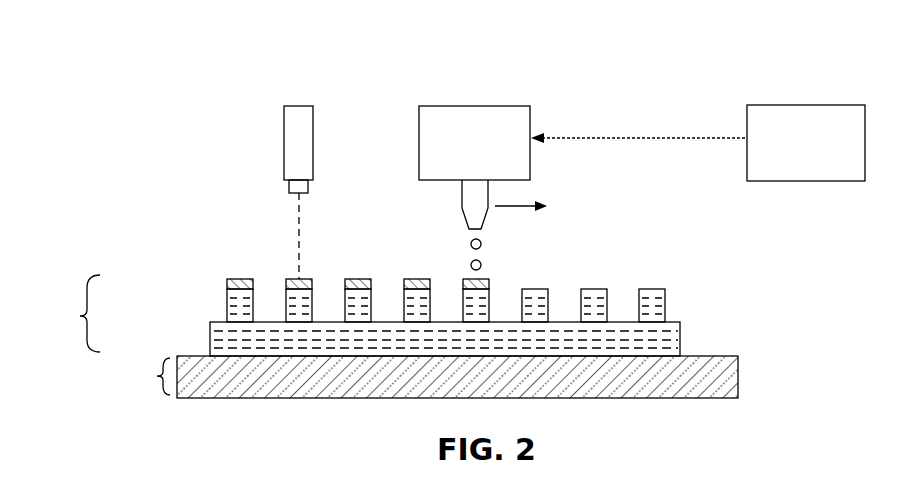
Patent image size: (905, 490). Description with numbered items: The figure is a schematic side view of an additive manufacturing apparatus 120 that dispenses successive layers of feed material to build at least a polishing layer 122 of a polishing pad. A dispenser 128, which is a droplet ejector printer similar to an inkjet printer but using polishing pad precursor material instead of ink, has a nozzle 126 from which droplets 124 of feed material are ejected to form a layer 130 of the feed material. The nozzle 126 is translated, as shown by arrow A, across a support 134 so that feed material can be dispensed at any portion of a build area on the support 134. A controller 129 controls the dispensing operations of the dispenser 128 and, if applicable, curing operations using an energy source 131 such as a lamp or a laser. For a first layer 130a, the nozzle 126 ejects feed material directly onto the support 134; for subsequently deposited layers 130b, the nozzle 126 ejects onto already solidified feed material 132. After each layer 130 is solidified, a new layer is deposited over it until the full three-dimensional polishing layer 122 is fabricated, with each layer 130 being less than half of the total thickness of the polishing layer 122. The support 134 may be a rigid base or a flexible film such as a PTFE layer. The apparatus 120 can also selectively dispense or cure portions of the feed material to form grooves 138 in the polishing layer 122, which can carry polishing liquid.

The additive manufacturing apparatus 120 is at (647, 105).
The polishing layer 122 is at (80, 316).
The droplets 124 is at (471, 244).
The nozzle 126 is at (462, 198).
The dispenser 128 is at (419, 148).
The controller 129 is at (780, 181).
The layer 130 is at (227, 283).
The first layer 130a is at (210, 352).
The subsequently deposited layers 130b is at (210, 342).
The energy source 131 is at (284, 147).
The solidified feed material 132 is at (665, 303).
The support 134 is at (156, 377).
The grooves 138 is at (261, 269).